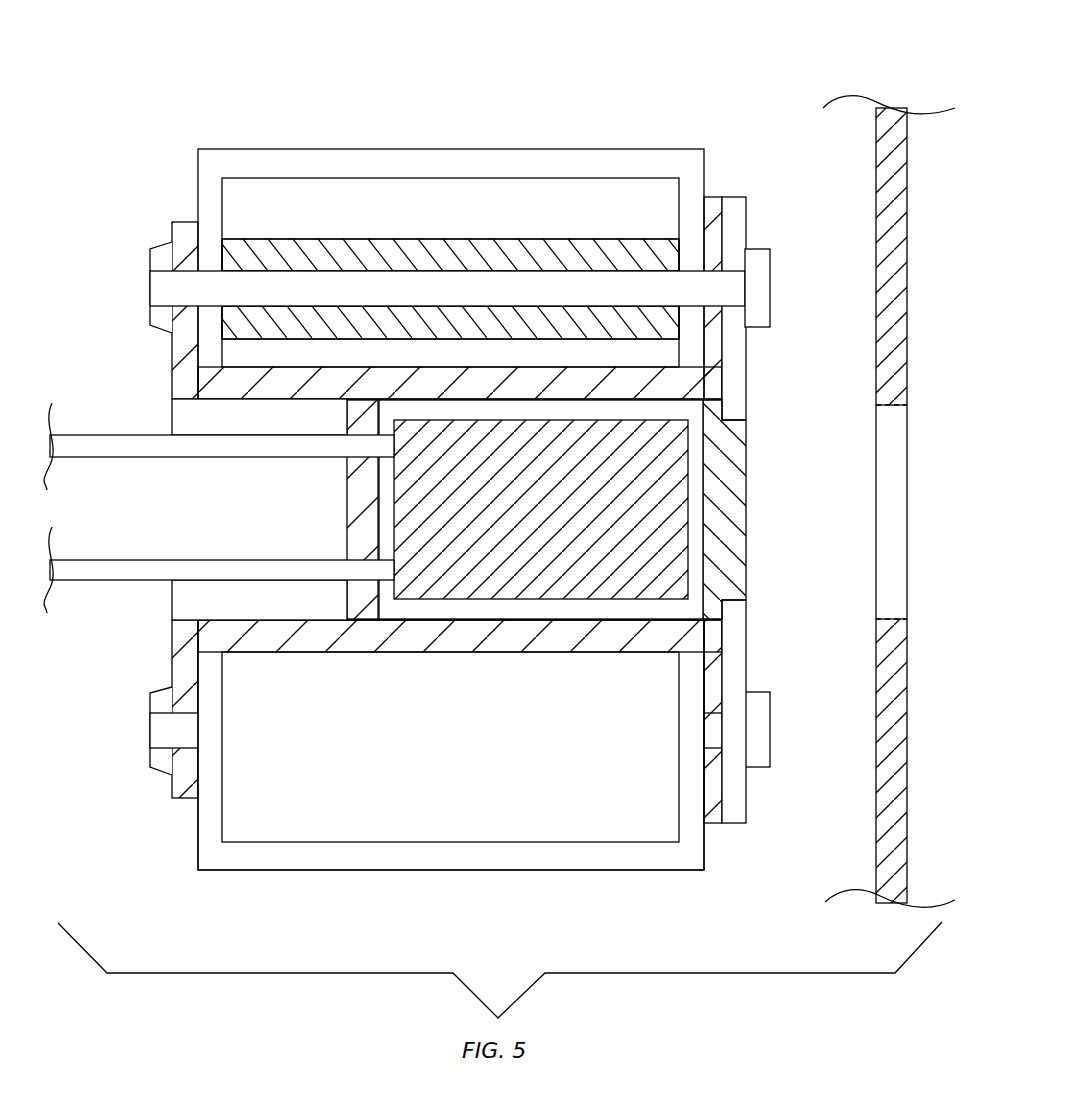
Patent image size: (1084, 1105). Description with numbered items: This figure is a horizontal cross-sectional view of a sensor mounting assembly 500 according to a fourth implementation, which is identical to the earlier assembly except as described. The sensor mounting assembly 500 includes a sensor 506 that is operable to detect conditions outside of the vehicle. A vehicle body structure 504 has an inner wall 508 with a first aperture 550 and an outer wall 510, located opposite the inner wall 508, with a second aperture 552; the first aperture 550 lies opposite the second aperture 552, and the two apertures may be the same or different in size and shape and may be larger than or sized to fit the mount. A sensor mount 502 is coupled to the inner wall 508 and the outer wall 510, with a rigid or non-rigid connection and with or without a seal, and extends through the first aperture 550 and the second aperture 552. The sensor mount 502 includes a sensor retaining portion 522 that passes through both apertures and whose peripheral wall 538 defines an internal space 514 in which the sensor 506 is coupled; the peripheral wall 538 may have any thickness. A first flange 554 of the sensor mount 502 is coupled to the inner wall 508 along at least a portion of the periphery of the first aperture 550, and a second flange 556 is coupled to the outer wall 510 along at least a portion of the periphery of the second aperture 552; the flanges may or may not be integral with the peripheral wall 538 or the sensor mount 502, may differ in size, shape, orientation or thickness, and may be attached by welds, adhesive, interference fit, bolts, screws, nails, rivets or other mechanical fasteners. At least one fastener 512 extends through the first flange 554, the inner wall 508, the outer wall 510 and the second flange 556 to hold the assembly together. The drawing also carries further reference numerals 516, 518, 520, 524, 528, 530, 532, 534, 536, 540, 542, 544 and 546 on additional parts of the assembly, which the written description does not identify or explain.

The sensor mounting assembly 500 is at (508, 76).
The sensor mount 502 is at (538, 367).
The vehicle body structure 504 is at (237, 149).
The sensor 506 is at (690, 463).
The inner wall 508 is at (198, 837).
The outer wall 510 is at (705, 850).
The fastener 512 is at (294, 270).
The internal space 514 is at (700, 497).
The air gap 516 is at (770, 527).
The rotor side plate 518 is at (373, 458).
The shaft tube 520 is at (105, 434).
The sensor retaining portion 522 is at (580, 367).
The end plate face 524 is at (726, 554).
The coil winding 528 is at (341, 270).
The rod end cap 530 is at (771, 285).
The guide rod 532 is at (150, 297).
The bobbin 534 is at (422, 239).
The rod retainer 536 is at (170, 243).
The peripheral wall 538 is at (502, 652).
The upper end plate 540 is at (748, 430).
The lower end plate 542 is at (750, 782).
The mounting wall 544 is at (907, 170).
The wall opening 546 is at (909, 451).
The first aperture 550 is at (92, 532).
The second aperture 552 is at (774, 505).
The first flange 554 is at (172, 650).
The second flange 556 is at (715, 825).